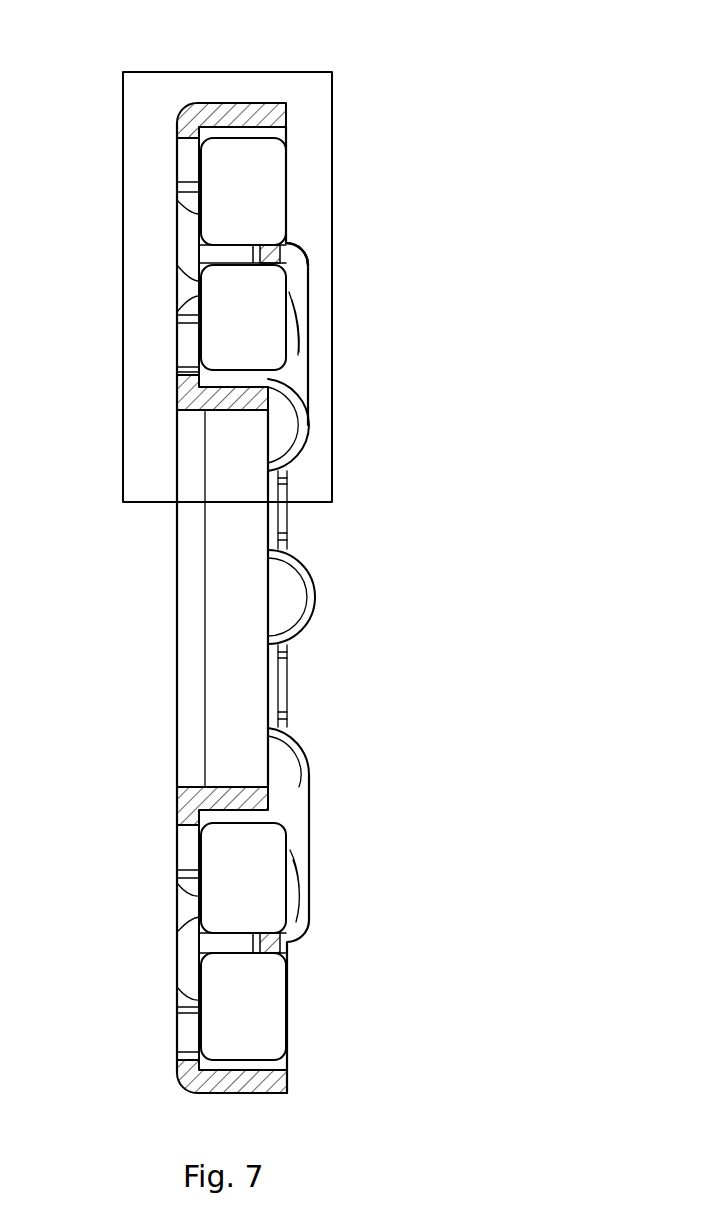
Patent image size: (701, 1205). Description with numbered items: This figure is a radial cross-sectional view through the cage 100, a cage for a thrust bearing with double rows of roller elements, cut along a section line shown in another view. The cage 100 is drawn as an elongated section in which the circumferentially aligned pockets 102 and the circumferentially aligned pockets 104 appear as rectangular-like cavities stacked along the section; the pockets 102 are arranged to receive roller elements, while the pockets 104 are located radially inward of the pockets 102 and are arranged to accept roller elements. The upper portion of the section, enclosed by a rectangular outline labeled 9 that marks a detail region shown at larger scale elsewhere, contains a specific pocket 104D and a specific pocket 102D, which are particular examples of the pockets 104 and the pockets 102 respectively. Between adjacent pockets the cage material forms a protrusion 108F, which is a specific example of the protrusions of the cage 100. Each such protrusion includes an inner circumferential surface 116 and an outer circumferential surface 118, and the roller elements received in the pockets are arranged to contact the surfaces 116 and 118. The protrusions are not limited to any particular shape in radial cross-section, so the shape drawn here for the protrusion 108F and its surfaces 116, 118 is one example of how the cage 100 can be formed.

The cage 100 is at (463, 68).
The detail region of FIG. 9 is at (123, 362).
The pocket 104D is at (258, 173).
The pocket 102D is at (258, 357).
The circumferentially aligned pockets 102 is at (258, 840).
The circumferentially aligned pockets 104 is at (258, 1042).
The outer circumferential surface 118 is at (272, 245).
The inner circumferential surface 116 is at (268, 270).
The protrusion 108F is at (286, 262).